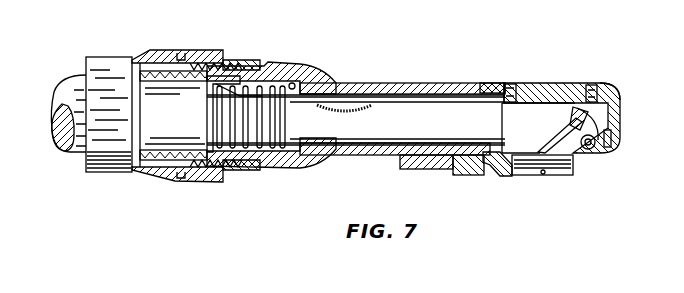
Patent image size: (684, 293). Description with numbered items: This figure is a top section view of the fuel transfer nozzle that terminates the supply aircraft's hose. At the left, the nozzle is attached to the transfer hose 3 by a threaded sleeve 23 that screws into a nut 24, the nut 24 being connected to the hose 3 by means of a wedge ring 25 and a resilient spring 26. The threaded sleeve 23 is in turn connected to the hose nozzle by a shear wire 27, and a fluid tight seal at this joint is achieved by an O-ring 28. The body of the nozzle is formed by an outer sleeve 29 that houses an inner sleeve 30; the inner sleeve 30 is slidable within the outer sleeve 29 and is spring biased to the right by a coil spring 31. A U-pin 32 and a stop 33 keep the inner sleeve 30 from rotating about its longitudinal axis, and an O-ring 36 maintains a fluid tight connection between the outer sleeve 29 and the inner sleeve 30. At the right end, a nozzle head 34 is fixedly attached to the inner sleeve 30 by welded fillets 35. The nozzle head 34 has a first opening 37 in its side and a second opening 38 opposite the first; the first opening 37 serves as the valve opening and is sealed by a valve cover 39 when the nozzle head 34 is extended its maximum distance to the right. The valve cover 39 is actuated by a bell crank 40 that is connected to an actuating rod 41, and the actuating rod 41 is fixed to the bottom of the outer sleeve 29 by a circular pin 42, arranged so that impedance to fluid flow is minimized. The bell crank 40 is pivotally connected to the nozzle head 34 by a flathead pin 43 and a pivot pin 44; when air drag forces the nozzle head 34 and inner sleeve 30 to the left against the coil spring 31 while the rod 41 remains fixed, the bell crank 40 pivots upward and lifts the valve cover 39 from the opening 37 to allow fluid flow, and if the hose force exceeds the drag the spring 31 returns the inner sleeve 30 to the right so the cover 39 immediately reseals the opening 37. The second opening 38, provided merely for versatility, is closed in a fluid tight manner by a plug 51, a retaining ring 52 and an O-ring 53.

The transfer hose 3 is at (66, 76).
The resilient spring 26 is at (108, 68).
The nut 24 is at (212, 176).
The wedge ring 25 is at (178, 168).
The threaded sleeve 23 is at (242, 172).
The shear wire 27 is at (264, 165).
The O-ring 28 is at (232, 74).
The circular pin 42 is at (222, 128).
The coil spring 31 is at (266, 126).
The outer sleeve 29 is at (376, 82).
The actuating rod 41 is at (336, 106).
The O-ring 36 is at (293, 82).
The inner sleeve 30 is at (432, 94).
The welded fillets 35 is at (488, 82).
The second opening 38 is at (511, 84).
The plug 51 is at (550, 83).
The retaining ring 52 is at (590, 84).
The nozzle head 34 is at (619, 94).
The flathead pin 43 is at (612, 138).
The O-ring 53 is at (560, 106).
The pivot pin 44 is at (594, 148).
The bell crank 40 is at (582, 150).
The first opening 37 is at (552, 176).
The valve cover 39 is at (510, 176).
The U-pin 32 is at (422, 170).
The stop 33 is at (469, 176).